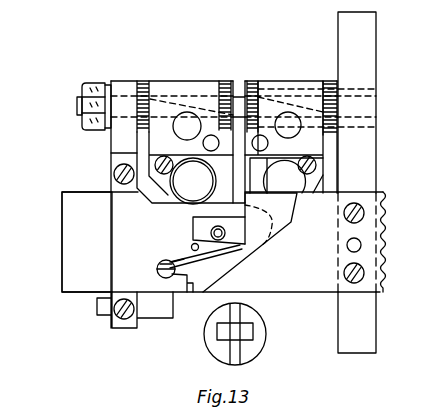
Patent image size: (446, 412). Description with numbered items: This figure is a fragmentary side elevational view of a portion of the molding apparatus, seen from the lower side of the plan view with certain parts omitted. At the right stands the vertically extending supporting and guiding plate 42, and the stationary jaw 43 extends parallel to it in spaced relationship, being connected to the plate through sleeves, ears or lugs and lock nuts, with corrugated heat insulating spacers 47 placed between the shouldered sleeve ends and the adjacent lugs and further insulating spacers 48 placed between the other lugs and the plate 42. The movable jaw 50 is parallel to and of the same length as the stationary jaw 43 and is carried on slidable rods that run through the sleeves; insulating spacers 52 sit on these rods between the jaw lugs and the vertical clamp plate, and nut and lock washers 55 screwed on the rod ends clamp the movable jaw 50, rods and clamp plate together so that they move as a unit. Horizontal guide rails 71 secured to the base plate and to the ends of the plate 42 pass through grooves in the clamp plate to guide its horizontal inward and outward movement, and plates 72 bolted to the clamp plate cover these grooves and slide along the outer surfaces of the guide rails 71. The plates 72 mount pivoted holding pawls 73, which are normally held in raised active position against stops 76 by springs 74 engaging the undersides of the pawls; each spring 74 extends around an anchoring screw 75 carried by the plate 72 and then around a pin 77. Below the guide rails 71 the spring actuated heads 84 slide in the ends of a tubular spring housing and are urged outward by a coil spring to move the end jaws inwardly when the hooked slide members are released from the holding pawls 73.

The vertically extending supporting and guiding plate 42 is at (366, 52).
The stationary jaw 43 is at (290, 82).
The corrugated heat insulating spacers 47 is at (253, 82).
The insulating spacers 48 is at (328, 82).
The movable jaw 50 is at (184, 61).
The insulating spacers 52 is at (167, 52).
The nut and lock washers 55 is at (92, 130).
The horizontal guide rails 71 is at (309, 292).
The plates 72 is at (112, 256).
The pivoted holding pawls 73 is at (277, 230).
The springs 74 is at (226, 269).
The anchoring screws 75 is at (176, 234).
The stops 76 is at (181, 260).
The pins 77 is at (193, 292).
The spring actuated heads 84 is at (268, 348).